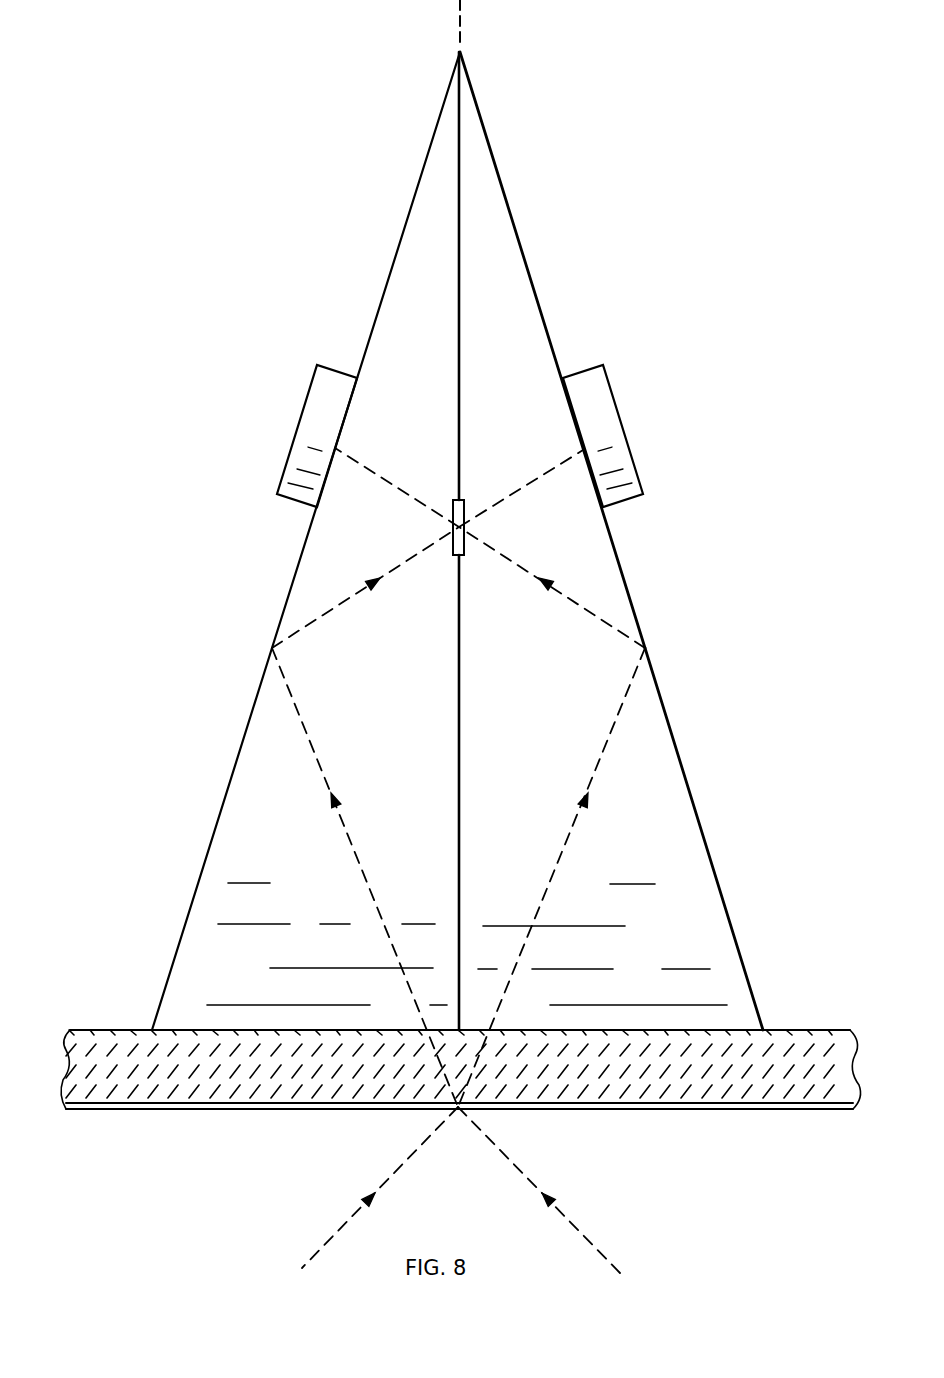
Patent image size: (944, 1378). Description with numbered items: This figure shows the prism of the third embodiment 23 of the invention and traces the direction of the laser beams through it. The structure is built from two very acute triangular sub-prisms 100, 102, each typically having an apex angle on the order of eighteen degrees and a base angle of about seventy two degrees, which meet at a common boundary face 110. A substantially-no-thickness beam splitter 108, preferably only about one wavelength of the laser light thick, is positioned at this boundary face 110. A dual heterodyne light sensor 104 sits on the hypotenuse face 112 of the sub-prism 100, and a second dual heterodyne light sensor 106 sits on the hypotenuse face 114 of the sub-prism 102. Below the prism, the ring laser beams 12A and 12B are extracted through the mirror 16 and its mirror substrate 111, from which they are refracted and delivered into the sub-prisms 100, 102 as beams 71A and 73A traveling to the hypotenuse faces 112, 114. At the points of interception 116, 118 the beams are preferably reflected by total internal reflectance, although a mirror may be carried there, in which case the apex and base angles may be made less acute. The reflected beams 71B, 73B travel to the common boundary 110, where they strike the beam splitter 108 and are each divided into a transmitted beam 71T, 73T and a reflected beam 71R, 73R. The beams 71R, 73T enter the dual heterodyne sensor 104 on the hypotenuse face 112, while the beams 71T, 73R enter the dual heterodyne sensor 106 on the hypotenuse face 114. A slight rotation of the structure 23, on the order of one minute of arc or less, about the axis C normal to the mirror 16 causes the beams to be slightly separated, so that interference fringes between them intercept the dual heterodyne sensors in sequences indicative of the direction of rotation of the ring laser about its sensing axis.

The axis C is at (465, 25).
The sub-prism 100 is at (410, 316).
The sub-prism 102 is at (508, 358).
The dual heterodyne light sensor 104 is at (297, 453).
The dual heterodyne light sensor 106 is at (610, 420).
The beam splitter 108 is at (463, 503).
The boundary face 110 is at (458, 770).
The hypotenuse face 112 is at (183, 958).
The hypotenuse face 114 is at (627, 585).
The point of interception 116 is at (275, 646).
The point of interception 118 is at (645, 648).
The third embodiment 23 is at (741, 602).
The mirror substrate 111 is at (800, 1040).
The mirror 16 is at (681, 1110).
The ring laser beam 12A is at (402, 1165).
The ring laser beam 12B is at (513, 1165).
The beam 71A is at (358, 850).
The beam 71B is at (340, 607).
The reflected beam 71R is at (397, 476).
The transmitted beam 71T is at (521, 474).
The beam 73A is at (562, 850).
The beam 73B is at (576, 607).
The reflected beam 73R is at (548, 472).
The transmitted beam 73T is at (375, 472).